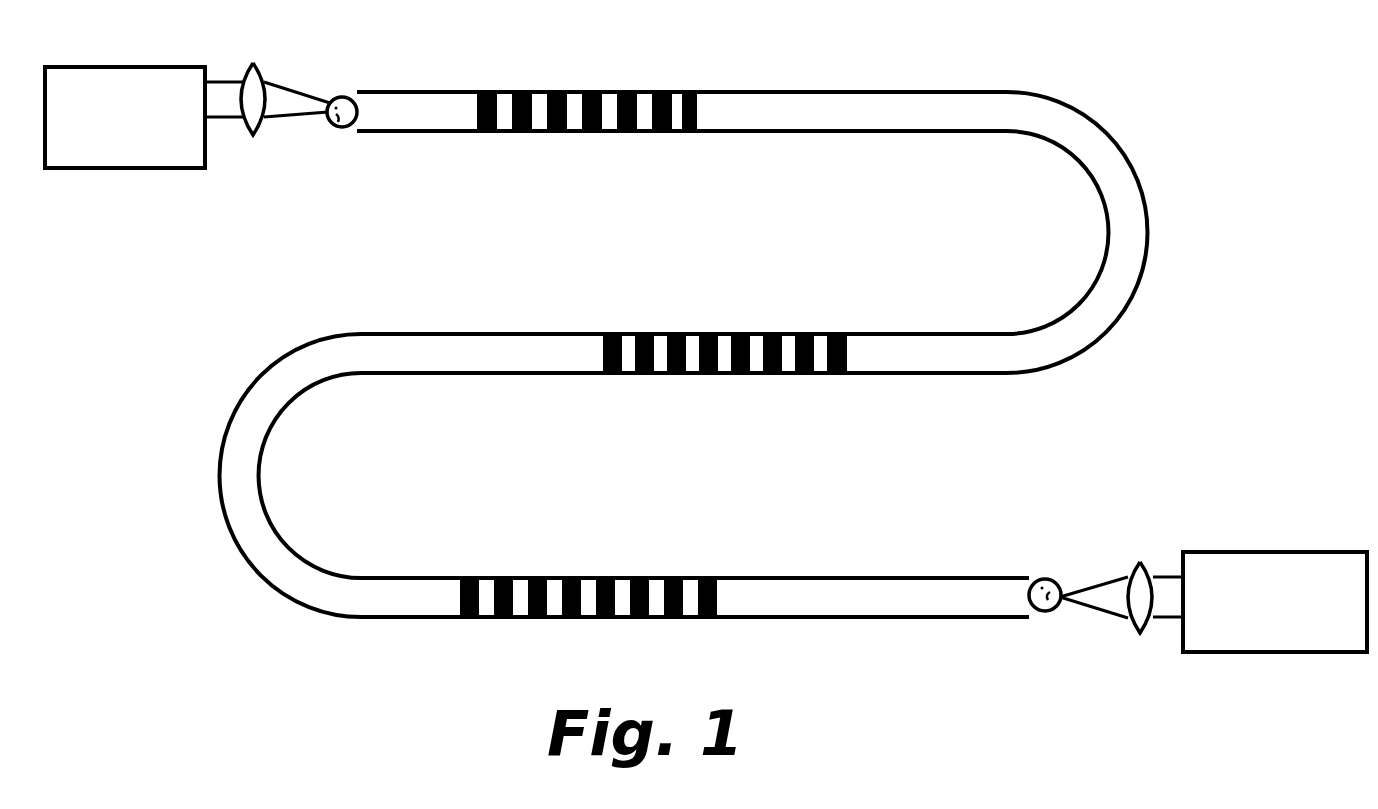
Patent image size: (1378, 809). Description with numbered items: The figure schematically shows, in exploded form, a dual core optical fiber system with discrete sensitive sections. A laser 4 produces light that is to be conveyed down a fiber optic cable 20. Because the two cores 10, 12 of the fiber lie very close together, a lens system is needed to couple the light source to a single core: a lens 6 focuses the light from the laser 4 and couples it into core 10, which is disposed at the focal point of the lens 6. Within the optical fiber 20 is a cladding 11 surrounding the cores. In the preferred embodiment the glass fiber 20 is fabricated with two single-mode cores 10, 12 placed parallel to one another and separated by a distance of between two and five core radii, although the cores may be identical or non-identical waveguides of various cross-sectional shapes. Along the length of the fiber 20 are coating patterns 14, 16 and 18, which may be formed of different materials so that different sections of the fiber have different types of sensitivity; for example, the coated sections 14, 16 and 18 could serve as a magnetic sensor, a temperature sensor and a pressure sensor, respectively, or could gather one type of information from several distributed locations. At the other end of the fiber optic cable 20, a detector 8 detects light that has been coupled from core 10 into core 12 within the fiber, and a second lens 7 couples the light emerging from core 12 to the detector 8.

The laser 4 is at (118, 170).
The lens 6 is at (252, 120).
The second lens 7 is at (1136, 612).
The detector 8 is at (1312, 552).
The core 10 is at (342, 97).
The cladding 11 is at (324, 120).
The core 12 is at (340, 128).
The coating pattern 14 is at (477, 85).
The coating pattern 16 is at (847, 328).
The coating pattern 18 is at (717, 572).
The fiber optic cable 20 is at (933, 92).